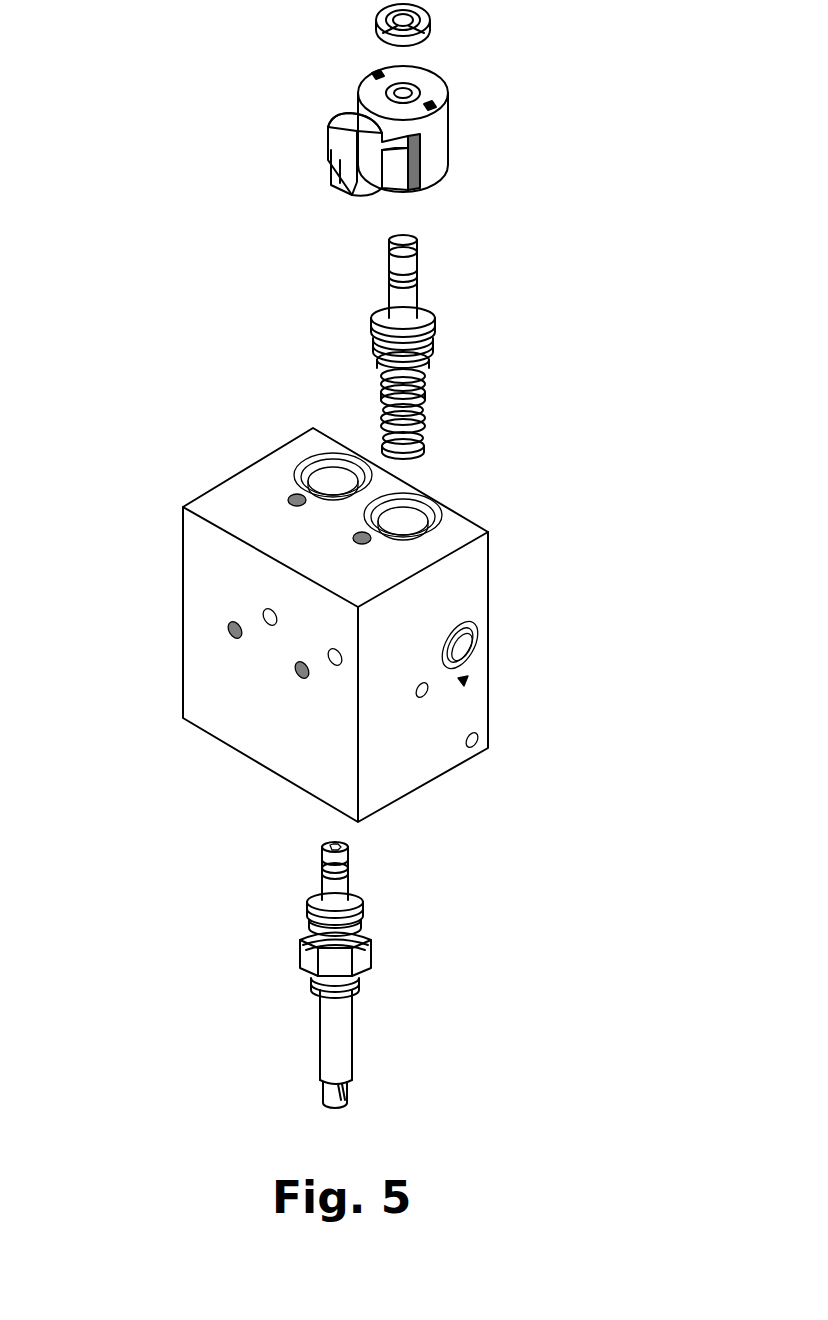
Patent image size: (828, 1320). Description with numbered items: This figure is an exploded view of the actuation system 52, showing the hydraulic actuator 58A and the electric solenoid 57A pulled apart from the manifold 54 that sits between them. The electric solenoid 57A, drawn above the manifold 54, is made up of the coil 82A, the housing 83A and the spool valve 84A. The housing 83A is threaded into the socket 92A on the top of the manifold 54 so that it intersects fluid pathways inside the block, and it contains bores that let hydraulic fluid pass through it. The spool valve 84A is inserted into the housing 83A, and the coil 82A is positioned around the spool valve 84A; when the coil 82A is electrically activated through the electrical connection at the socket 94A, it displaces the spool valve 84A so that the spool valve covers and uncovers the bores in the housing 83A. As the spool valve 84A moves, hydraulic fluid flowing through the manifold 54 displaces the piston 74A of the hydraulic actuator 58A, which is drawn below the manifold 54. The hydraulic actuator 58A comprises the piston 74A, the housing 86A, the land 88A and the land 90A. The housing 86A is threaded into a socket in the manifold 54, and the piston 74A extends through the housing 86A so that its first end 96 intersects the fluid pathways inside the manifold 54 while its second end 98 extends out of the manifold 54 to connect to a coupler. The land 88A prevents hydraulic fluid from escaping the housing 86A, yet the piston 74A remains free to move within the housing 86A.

The actuation system 52 is at (213, 467).
The manifold 54 is at (291, 625).
The electric solenoid 57A is at (462, 286).
The hydraulic actuator 58A is at (392, 935).
The piston 74A is at (345, 1046).
The coil 82A is at (352, 118).
The housing 83A is at (424, 362).
The spool valve 84A is at (425, 310).
The housing 86A is at (305, 945).
The land 88A is at (312, 920).
The land 90A is at (308, 864).
The socket 92A is at (418, 505).
The socket 94A is at (352, 118).
The first end 96 is at (348, 850).
The second end 98 is at (338, 1110).